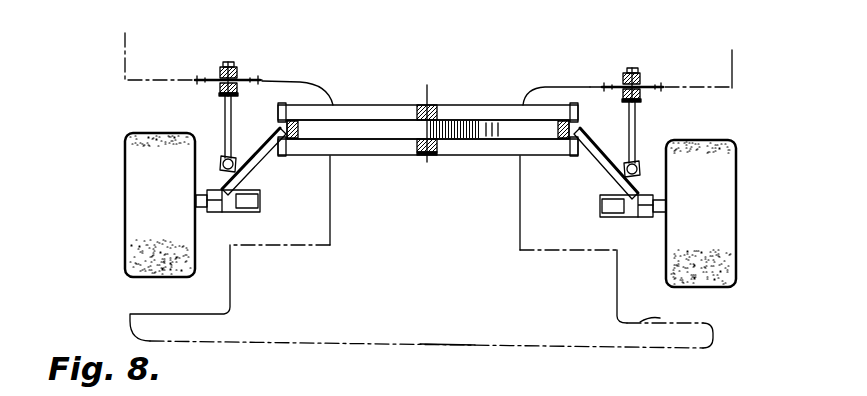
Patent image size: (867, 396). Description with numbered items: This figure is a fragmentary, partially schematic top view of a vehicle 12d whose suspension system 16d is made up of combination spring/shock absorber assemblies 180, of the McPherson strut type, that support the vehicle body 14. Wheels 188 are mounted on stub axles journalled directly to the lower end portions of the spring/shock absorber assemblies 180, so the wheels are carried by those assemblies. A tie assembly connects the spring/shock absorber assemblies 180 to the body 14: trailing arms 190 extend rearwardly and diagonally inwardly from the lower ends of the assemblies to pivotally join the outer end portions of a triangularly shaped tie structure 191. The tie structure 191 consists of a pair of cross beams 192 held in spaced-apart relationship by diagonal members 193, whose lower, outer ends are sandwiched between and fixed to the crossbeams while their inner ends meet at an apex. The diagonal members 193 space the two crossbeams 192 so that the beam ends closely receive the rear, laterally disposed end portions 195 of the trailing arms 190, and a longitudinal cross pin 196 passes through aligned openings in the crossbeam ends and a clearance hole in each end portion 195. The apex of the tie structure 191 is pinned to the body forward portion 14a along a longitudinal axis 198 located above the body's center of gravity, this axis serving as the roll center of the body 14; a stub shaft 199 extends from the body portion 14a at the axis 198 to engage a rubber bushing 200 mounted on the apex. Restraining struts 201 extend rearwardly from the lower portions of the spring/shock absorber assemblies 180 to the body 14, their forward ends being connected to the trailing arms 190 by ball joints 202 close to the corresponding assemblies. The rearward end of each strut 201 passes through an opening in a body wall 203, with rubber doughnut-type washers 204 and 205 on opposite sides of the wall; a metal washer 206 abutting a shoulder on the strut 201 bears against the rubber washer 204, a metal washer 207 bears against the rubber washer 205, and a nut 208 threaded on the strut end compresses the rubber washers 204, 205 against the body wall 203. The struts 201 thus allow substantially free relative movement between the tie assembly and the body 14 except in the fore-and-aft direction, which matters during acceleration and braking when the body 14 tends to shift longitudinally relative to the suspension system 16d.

The vehicle 12d is at (88, 161).
The vehicle body 14 is at (732, 65).
The body forward portion 14a is at (660, 318).
The suspension system 16d is at (477, 348).
The spring/shock absorber assembly 180 is at (224, 212).
The wheel 188 is at (737, 174).
The trailing arm 190 is at (258, 190).
The tie structure 191 is at (445, 165).
The cross beam 192 is at (368, 150).
The diagonal member 193 is at (484, 136).
The end portion of trailing arm 195 is at (268, 158).
The longitudinal cross pin 196 is at (280, 106).
The longitudinal axis 198 is at (430, 97).
The stub shaft 199 is at (421, 158).
The rubber bushing 200 is at (414, 143).
The restraining strut 201 is at (225, 120).
The ball joint 202 is at (222, 160).
The body wall 203 is at (258, 80).
The rubber doughnut-type washer 204 is at (219, 85).
The rubber doughnut-type washer 205 is at (220, 68).
The metal washer 206 is at (219, 93).
The metal washer 207 is at (224, 62).
The nut 208 is at (237, 71).